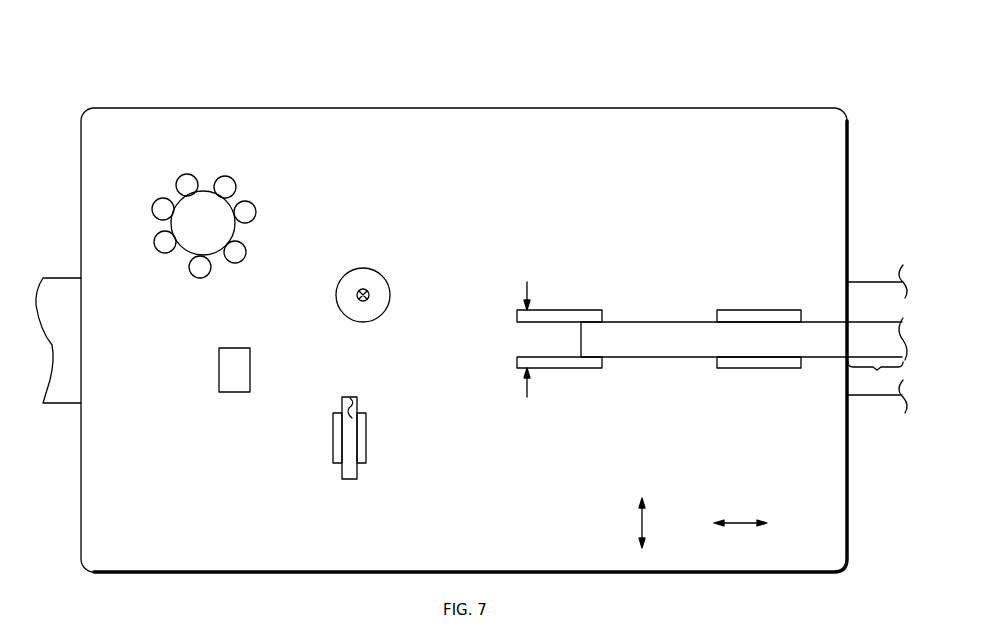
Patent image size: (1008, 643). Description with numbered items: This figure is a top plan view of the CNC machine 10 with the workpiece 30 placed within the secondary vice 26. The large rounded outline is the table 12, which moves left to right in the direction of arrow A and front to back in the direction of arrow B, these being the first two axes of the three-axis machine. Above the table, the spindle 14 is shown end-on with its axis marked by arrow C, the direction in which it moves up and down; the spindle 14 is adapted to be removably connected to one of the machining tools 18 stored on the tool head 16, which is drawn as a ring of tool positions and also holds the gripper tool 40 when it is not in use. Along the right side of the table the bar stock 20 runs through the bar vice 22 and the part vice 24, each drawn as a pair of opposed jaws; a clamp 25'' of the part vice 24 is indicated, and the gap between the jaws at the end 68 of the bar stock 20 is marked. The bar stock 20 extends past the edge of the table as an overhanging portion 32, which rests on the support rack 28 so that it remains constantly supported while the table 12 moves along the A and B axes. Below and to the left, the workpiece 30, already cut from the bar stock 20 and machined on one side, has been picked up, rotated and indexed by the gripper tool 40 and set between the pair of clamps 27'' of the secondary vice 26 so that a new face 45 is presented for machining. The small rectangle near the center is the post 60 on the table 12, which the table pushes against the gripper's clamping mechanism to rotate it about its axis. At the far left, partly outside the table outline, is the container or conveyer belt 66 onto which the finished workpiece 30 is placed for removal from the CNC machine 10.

The CNC machine 10 is at (638, 46).
The table 12 is at (460, 108).
The spindle 14 is at (364, 268).
The tool head 16 is at (177, 275).
The machining tools 18 is at (176, 185).
The bar stock 20 is at (817, 359).
The bar vice 22 is at (753, 291).
The part vice 24 is at (593, 285).
The clamp 25'' is at (474, 379).
The secondary vice 26 is at (338, 486).
The clamp 27'' is at (348, 438).
The support rack 28 is at (862, 282).
The workpiece 30 is at (358, 473).
The overhanging portion 32 is at (875, 375).
The gripper tool 40 is at (256, 209).
The new face 45 is at (345, 400).
The post 60 is at (250, 366).
The container or conveyer belt 66 is at (70, 403).
The end of bar stock 68 is at (569, 340).
The arrow A is at (742, 523).
The arrow B is at (642, 523).
The arrow C is at (369, 294).